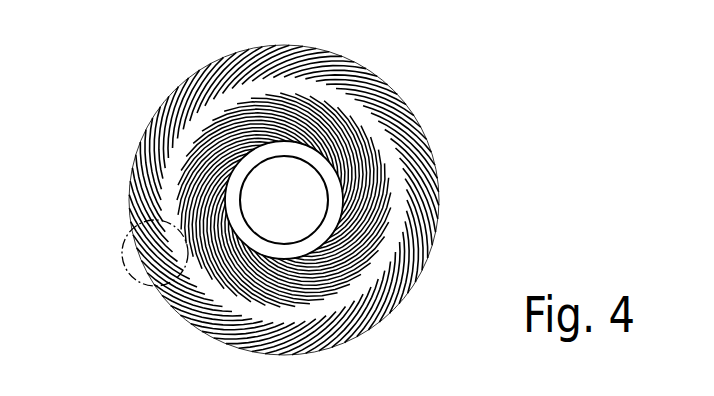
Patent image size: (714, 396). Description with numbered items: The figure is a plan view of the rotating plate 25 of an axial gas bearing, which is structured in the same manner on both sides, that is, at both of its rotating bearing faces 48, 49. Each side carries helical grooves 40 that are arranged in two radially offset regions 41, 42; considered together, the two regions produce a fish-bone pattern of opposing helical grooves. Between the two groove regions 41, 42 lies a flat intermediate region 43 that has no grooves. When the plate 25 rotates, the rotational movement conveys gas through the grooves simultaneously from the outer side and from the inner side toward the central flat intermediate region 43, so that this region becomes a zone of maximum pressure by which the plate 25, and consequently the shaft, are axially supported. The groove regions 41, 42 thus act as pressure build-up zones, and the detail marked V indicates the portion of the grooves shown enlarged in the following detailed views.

The rotating plate 25 is at (286, 185).
The helical grooves 40 is at (407, 116).
The groove region 41 is at (362, 157).
The groove region 42 is at (371, 77).
The flat intermediate region 43 is at (372, 267).
The rotating bearing face 48 is at (331, 185).
The rotating bearing face 49 is at (331, 185).
The detail view indicator V is at (120, 273).